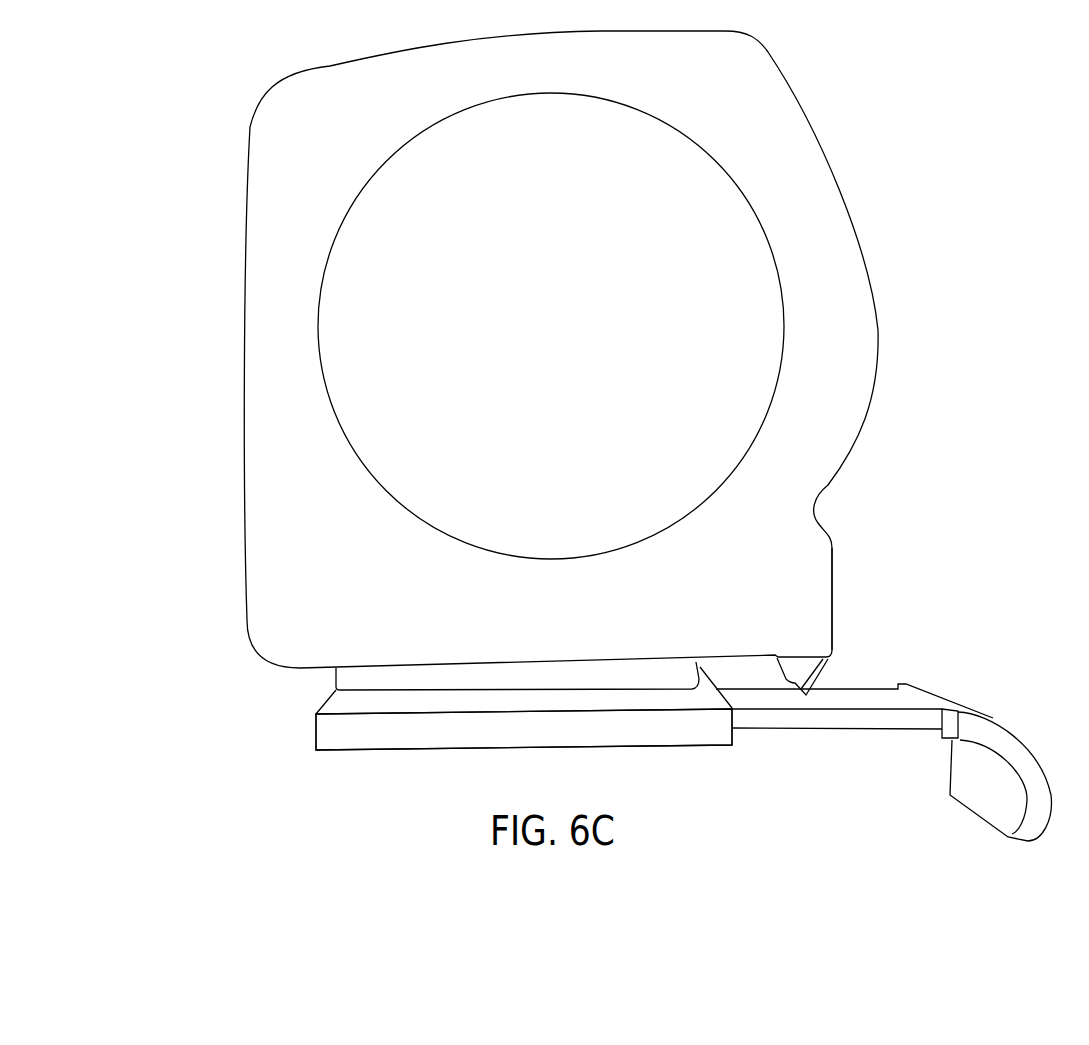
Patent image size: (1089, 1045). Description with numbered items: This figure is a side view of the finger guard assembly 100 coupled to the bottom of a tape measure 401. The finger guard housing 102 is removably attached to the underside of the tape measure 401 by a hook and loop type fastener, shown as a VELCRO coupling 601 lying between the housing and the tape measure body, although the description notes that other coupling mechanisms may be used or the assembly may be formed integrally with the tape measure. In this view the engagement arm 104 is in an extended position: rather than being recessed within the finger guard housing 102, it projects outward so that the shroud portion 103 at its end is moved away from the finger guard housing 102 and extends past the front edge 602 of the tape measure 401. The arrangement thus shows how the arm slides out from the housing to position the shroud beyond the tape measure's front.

The finger guard assembly 100 is at (430, 752).
The finger guard housing 102 is at (330, 737).
The shroud portion 103 is at (1015, 741).
The engagement arm 104 is at (832, 722).
The tape measure 401 is at (277, 520).
The VELCRO coupling 601 is at (350, 678).
The front edge 602 is at (815, 600).